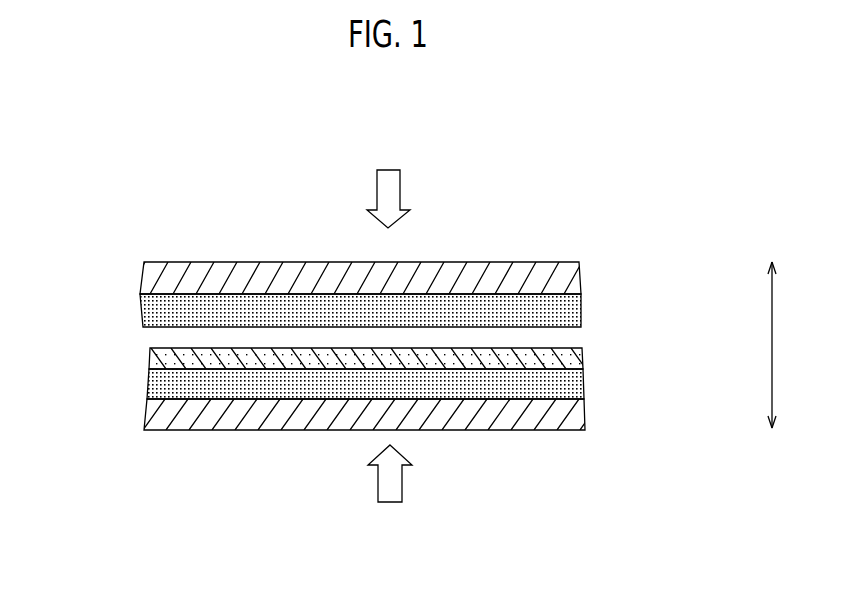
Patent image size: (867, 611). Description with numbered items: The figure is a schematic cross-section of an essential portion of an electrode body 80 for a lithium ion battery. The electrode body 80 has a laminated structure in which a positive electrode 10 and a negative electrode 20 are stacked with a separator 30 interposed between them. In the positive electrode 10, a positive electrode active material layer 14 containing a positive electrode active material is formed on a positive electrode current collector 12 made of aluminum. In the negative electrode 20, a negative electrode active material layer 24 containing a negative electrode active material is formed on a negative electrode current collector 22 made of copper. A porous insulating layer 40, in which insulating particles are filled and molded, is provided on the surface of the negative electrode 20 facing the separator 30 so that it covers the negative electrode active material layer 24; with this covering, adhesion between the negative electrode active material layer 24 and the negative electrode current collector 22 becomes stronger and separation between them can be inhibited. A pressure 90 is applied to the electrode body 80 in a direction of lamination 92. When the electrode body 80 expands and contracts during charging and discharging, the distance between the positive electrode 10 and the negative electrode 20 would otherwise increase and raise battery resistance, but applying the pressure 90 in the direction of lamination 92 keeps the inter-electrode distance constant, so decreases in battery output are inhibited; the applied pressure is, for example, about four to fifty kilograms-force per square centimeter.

The positive electrode 10 is at (424, 287).
The positive electrode current collector 12 is at (568, 272).
The positive electrode active material layer 14 is at (568, 312).
The negative electrode 20 is at (422, 388).
The negative electrode current collector 22 is at (395, 418).
The negative electrode active material layer 24 is at (568, 385).
The separator 30 is at (152, 333).
The porous insulating layer 40 is at (568, 357).
The electrode body 80 is at (551, 167).
The pressure 90 is at (393, 170).
The direction of lamination 92 is at (789, 345).